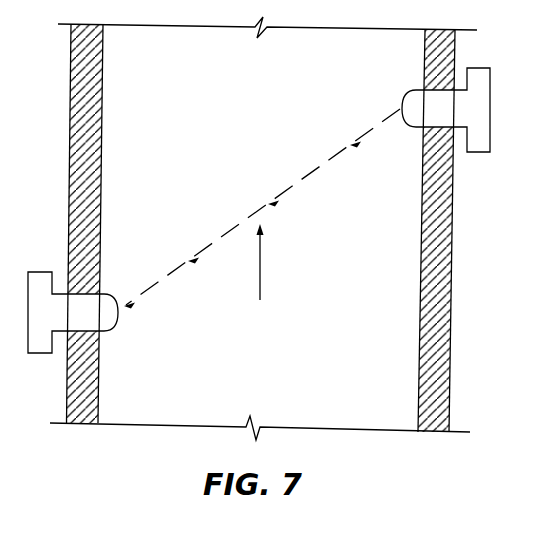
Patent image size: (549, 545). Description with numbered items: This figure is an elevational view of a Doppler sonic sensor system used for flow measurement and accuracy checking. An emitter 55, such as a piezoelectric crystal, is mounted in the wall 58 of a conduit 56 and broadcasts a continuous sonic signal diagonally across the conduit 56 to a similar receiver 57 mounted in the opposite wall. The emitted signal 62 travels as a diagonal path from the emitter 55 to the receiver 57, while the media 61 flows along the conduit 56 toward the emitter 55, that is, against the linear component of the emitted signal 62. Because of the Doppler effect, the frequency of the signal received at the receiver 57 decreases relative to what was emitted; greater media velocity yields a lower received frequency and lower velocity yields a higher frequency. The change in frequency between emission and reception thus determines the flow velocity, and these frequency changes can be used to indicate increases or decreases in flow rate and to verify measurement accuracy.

The emitter 55 is at (409, 92).
The conduit 56 is at (393, 243).
The receiver 57 is at (114, 328).
The wall 58 is at (452, 295).
The media 61 is at (261, 262).
The emitted signal 62 is at (284, 192).